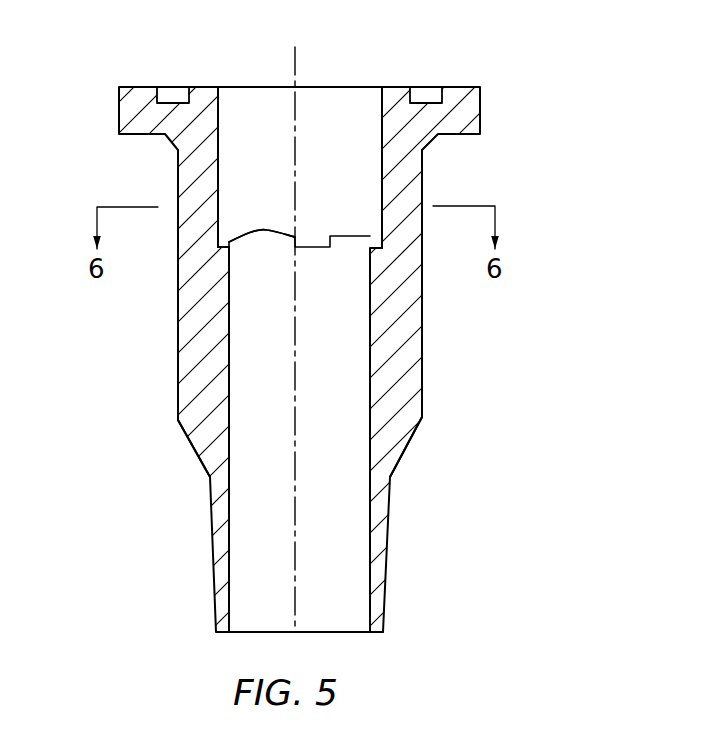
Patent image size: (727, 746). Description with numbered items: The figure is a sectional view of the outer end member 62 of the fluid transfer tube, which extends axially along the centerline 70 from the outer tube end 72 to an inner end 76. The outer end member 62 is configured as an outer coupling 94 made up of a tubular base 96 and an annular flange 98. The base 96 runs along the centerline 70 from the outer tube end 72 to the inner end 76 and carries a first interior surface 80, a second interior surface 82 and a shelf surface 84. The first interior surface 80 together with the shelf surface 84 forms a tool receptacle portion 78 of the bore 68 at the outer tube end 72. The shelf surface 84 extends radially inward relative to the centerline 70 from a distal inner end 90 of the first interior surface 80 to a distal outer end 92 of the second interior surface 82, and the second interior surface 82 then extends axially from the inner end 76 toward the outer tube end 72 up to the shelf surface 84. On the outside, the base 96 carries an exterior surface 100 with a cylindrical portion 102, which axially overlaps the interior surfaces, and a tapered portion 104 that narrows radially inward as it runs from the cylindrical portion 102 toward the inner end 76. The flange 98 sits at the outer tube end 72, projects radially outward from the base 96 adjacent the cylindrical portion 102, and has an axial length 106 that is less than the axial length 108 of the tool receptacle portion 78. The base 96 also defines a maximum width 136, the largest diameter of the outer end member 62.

The outer end member 62 is at (549, 142).
The bore 68 is at (345, 613).
The centerline 70 is at (304, 63).
The outer tube end 72 is at (470, 85).
The inner end 76 is at (380, 632).
The tool receptacle portion 78 is at (262, 142).
The first interior surface 80 is at (386, 130).
The second interior surface 82 is at (370, 452).
The shelf surface 84 is at (223, 247).
The distal inner end 90 is at (228, 247).
The distal outer end 92 is at (230, 248).
The outer coupling 94 is at (433, 312).
The tubular base 96 is at (176, 423).
The annular flange 98 is at (145, 83).
The exterior surface 100 is at (424, 408).
The cylindrical portion 102 is at (422, 343).
The tapered portion 104 is at (401, 458).
The axial length 106 is at (437, 87).
The axial length 108 is at (342, 88).
The maximum width 136 is at (421, 373).